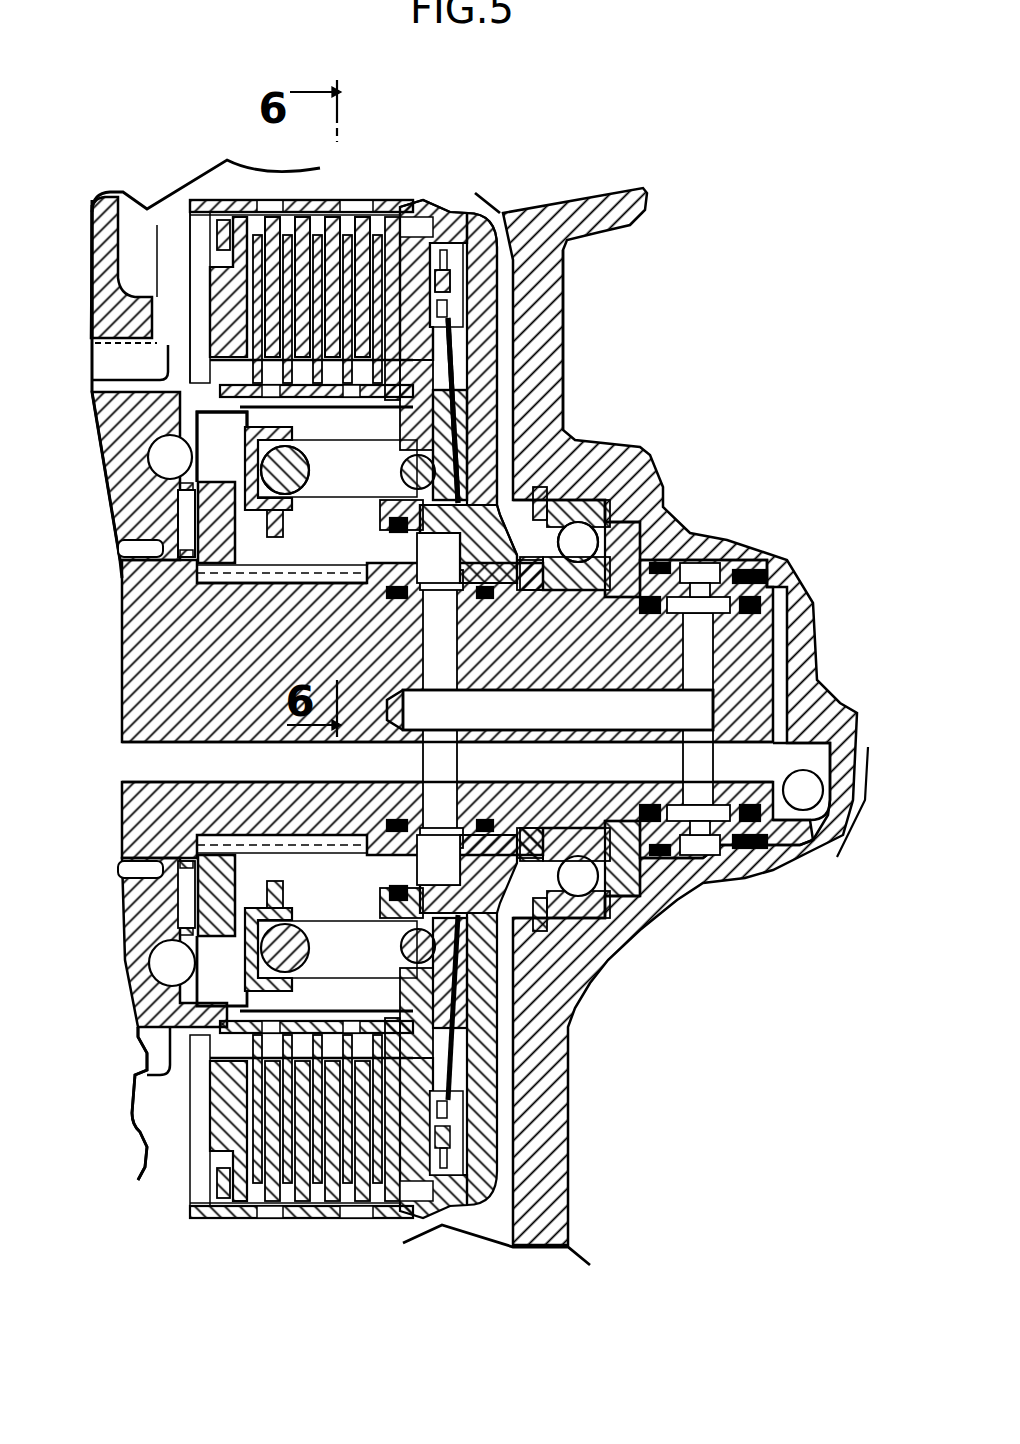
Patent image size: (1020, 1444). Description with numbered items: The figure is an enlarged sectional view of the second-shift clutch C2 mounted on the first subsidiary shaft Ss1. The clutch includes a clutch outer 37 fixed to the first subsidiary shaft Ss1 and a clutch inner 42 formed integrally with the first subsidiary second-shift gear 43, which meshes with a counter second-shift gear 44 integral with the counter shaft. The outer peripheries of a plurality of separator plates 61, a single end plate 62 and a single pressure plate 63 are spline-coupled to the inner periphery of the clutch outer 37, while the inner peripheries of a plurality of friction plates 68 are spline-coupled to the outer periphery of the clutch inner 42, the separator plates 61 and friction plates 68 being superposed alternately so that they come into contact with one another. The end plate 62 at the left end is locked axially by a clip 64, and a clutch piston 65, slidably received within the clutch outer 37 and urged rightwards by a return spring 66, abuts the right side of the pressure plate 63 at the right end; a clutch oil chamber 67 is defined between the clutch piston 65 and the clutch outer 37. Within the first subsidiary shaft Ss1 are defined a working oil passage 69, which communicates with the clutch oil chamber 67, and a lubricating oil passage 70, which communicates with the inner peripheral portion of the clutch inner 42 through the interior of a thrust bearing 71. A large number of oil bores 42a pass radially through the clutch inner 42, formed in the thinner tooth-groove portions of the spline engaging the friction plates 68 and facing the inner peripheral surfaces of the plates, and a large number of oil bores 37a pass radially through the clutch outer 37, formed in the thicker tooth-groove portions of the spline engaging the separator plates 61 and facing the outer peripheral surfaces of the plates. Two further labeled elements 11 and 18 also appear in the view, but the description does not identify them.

The transmission case 11 is at (557, 340).
The bearing 18 is at (582, 530).
The clutch outer 37 is at (452, 208).
The oil bores 37a is at (273, 207).
The clutch inner 42 is at (246, 416).
The oil bores 42a is at (345, 360).
The first subsidiary second-shift gear 43 is at (160, 1057).
The counter second-shift gear 44 is at (125, 315).
The separator plates 61 is at (333, 217).
The end plate 62 is at (190, 347).
The pressure plate 63 is at (410, 223).
The clip 64 is at (223, 233).
The clutch piston 65 is at (418, 282).
The return spring 66 is at (300, 497).
The clutch oil chamber 67 is at (465, 348).
The friction plates 68 is at (375, 393).
The working oil passage 69 is at (598, 700).
The lubricating oil passage 70 is at (312, 773).
The thrust bearing 71 is at (188, 483).
The second-shift clutch C2 is at (520, 166).
The first subsidiary shaft Ss1 is at (200, 671).